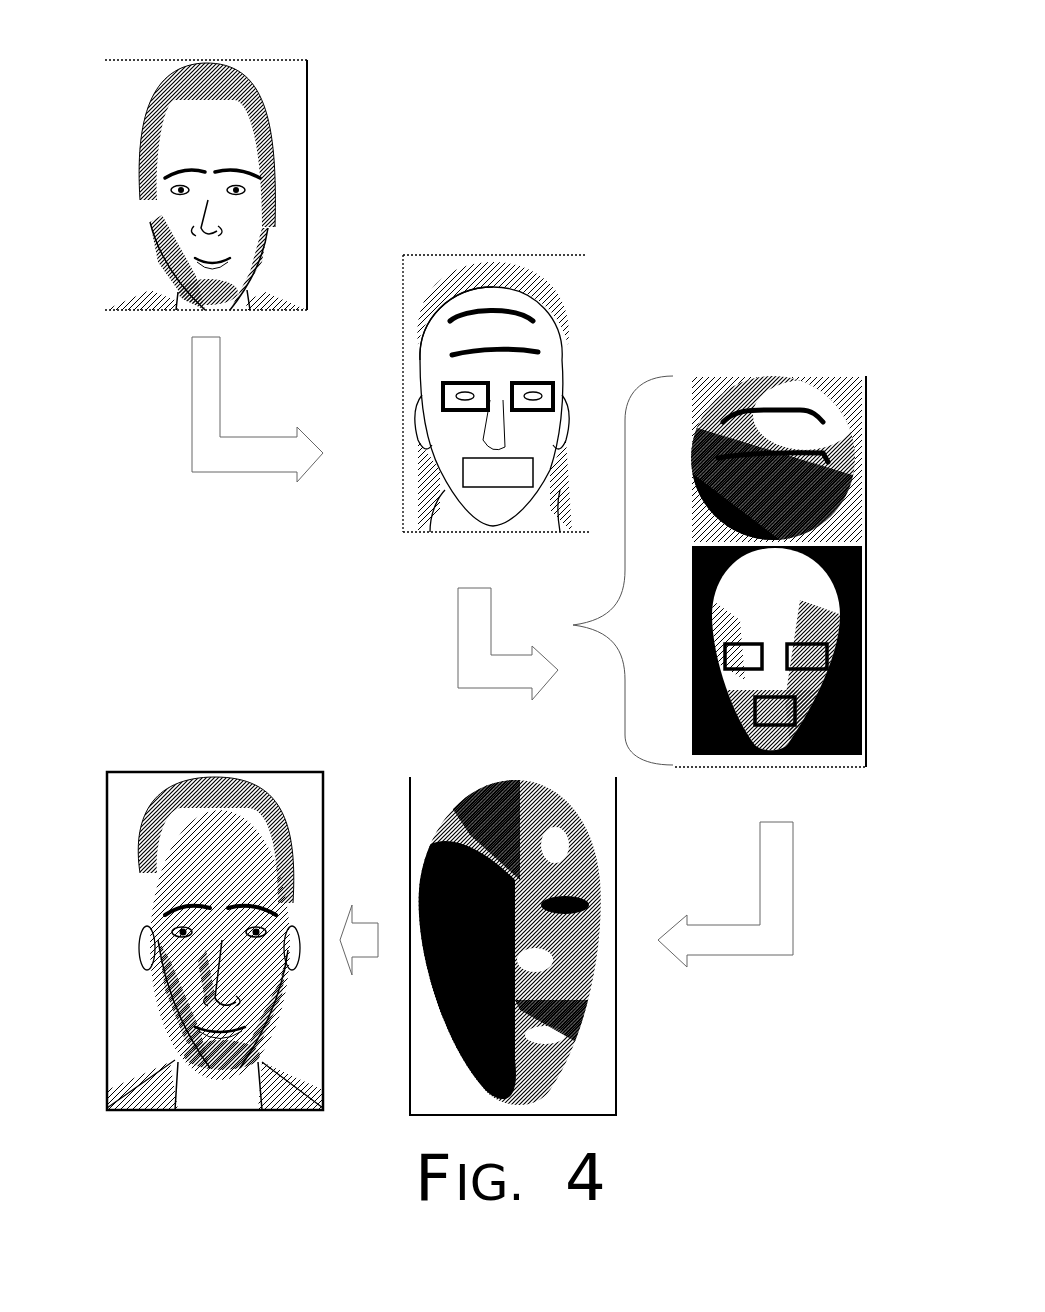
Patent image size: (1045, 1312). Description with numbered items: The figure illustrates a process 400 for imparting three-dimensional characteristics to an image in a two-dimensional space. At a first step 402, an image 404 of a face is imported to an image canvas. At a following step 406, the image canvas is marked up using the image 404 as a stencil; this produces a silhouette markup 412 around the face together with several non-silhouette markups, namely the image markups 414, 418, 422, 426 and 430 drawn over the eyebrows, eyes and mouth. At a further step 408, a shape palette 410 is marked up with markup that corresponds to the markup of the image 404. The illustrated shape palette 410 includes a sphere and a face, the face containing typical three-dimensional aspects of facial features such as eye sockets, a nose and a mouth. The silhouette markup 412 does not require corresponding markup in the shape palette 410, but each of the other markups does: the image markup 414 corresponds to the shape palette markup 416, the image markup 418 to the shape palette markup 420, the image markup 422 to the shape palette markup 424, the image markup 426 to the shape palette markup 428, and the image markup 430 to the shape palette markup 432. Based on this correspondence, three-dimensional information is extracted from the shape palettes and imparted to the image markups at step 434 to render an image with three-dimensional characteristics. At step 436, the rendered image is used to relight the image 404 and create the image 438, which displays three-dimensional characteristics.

The process for imparting 3D characteristics to an image 400 is at (700, 67).
The image import step 402 is at (155, 58).
The image 404 is at (273, 92).
The image canvas markup step 406 is at (403, 265).
The shape palette markup step 408 is at (718, 376).
The shape palette 410 is at (602, 570).
The silhouette markup 412 is at (492, 287).
The image markup 414 is at (510, 307).
The shape palette markup 416 is at (787, 410).
The image markup 418 is at (528, 348).
The shape palette markup 420 is at (812, 452).
The image markup 422 is at (442, 385).
The shape palette markup 424 is at (743, 641).
The image markup 426 is at (553, 385).
The shape palette markup 428 is at (820, 649).
The image markup 430 is at (467, 483).
The shape palette markup 432 is at (799, 707).
The 3D rendering step 434 is at (458, 782).
The relighting step 436 is at (170, 770).
The relit image 438 is at (290, 812).